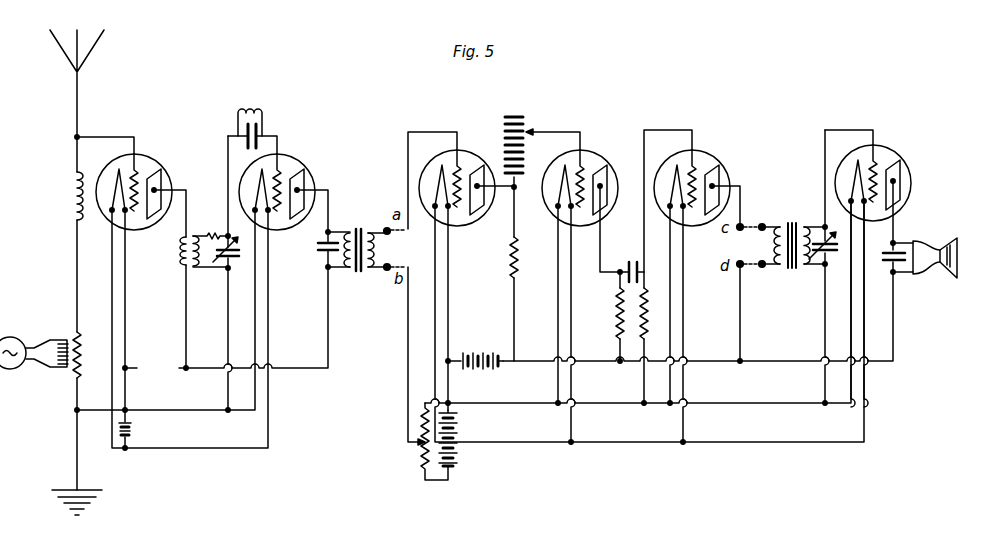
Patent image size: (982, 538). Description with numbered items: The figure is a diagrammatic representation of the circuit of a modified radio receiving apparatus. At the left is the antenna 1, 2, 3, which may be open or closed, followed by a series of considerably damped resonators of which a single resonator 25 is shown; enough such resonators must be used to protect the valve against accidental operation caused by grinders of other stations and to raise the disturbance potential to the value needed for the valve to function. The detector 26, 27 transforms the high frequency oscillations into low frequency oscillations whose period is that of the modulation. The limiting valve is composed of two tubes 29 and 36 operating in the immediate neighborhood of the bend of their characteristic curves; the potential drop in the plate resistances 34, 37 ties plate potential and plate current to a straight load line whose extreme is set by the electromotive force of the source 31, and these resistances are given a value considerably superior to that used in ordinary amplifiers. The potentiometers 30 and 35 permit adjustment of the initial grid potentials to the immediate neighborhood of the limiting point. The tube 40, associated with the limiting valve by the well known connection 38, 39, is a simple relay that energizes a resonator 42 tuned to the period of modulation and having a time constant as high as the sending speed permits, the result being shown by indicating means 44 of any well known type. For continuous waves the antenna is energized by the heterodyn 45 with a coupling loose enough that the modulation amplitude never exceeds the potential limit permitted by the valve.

The antenna 1 is at (77, 272).
The antenna 2 is at (69, 196).
The antenna 3 is at (85, 355).
The damped resonator 25 is at (209, 240).
The detector 26 is at (252, 162).
The detector 27 is at (279, 184).
The tube of the limiting valve 29 is at (457, 178).
The potentiometer 30 is at (427, 441).
The source 31 is at (483, 346).
The plate resistance 34 is at (528, 264).
The potentiometer 35 is at (528, 141).
The tube of the limiting valve 36 is at (580, 178).
The plate resistance 37 is at (610, 313).
The connection 38 is at (627, 260).
The connection 39 is at (656, 313).
The tube relay 40 is at (692, 178).
The resonator 42 is at (805, 236).
The indicating means 44 is at (925, 266).
The heterodyn 45 is at (34, 364).